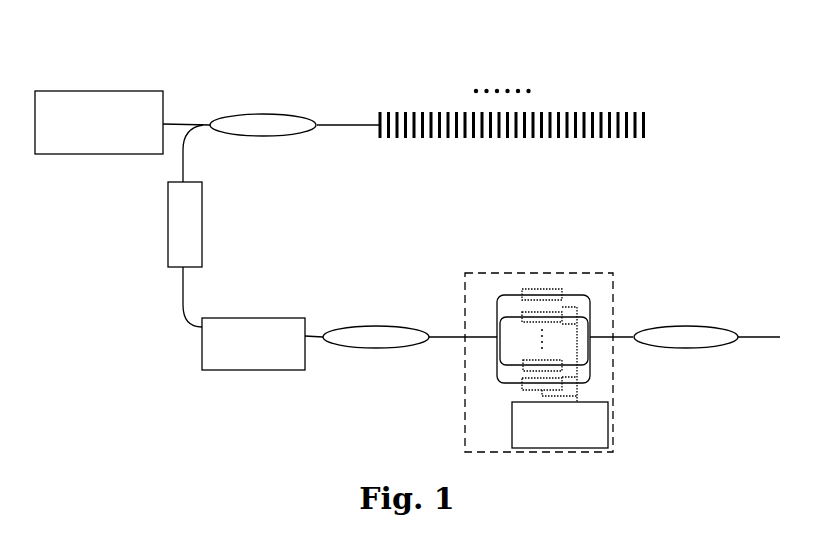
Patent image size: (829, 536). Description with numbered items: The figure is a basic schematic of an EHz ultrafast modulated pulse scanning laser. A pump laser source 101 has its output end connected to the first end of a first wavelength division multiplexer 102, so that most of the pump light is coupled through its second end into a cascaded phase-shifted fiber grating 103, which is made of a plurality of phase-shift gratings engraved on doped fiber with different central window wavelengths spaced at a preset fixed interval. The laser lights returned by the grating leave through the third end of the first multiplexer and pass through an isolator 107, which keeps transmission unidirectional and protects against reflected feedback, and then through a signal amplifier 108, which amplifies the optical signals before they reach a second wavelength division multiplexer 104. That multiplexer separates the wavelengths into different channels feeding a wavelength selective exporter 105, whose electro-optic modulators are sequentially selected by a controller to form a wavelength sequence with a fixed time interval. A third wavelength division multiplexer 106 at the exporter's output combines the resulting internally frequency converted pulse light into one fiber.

The pump laser source 101 is at (77, 91).
The first wavelength division multiplexer 102 is at (275, 115).
The cascaded phase-shifted fiber grating 103 is at (645, 112).
The second wavelength division multiplexer 104 is at (380, 325).
The wavelength selective exporter 105 is at (537, 273).
The third wavelength division multiplexer 106 is at (692, 327).
The isolator 107 is at (202, 220).
The signal amplifier 108 is at (248, 318).